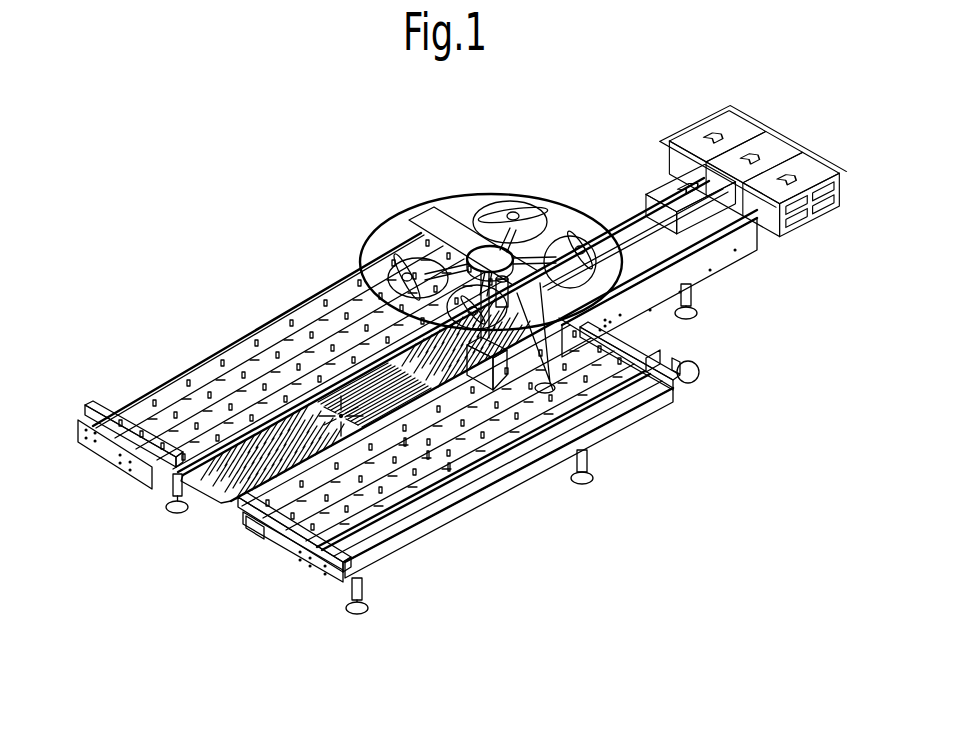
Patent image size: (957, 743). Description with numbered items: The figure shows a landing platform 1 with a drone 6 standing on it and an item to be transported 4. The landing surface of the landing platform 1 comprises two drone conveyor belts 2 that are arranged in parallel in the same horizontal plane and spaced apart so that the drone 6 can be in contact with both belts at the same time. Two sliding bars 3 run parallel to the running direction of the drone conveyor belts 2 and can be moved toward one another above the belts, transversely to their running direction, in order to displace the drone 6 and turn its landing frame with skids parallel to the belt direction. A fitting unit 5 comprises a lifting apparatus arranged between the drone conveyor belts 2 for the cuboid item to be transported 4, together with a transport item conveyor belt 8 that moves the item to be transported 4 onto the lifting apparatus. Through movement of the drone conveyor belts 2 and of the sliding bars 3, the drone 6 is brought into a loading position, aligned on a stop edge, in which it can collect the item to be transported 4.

The landing platform 1 is at (462, 343).
The drone conveyor belts 2 is at (419, 459).
The sliding bars 3 is at (426, 391).
The item to be transported 4 is at (496, 417).
The fitting unit 5 is at (549, 407).
The drone 6 is at (491, 226).
The transport item conveyor belt 8 is at (675, 183).